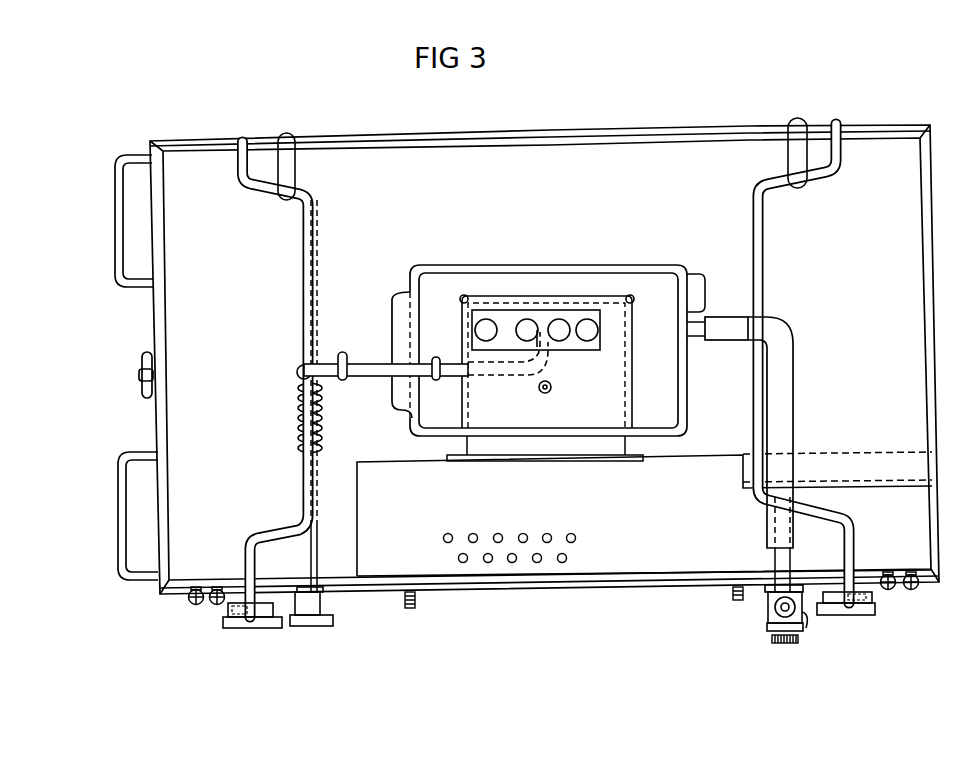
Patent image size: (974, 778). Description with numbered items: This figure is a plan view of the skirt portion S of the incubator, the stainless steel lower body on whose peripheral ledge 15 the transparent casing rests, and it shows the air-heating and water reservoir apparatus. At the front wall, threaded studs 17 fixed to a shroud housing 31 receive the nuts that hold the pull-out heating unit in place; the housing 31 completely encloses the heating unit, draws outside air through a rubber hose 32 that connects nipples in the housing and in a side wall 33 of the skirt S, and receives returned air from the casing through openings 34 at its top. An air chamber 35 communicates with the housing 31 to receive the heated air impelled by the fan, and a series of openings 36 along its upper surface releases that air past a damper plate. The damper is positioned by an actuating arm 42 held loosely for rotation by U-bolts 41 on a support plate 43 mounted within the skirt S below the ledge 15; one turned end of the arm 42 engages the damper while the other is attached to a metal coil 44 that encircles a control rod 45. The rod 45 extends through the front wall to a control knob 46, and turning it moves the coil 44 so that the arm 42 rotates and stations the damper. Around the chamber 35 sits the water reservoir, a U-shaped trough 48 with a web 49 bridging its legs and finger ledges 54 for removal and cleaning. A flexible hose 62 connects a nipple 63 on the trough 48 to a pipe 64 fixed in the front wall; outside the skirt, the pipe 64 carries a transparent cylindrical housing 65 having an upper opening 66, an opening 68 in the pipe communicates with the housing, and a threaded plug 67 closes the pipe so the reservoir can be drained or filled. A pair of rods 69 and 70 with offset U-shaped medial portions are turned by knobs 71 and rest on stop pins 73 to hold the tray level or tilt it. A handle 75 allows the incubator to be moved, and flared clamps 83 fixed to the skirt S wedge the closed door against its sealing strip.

The peripheral ledge 15 is at (583, 138).
The skirt portion S is at (508, 148).
The threaded studs 17 is at (412, 604).
The shroud housing 31 is at (707, 490).
The rubber hose 32 is at (826, 466).
The side wall 33 is at (940, 414).
The openings 34 is at (452, 535).
The air chamber 35 is at (625, 438).
The openings 36 is at (547, 361).
The U-bolts 41 is at (343, 346).
The actuating arm 42 is at (356, 379).
The support plate 43 is at (374, 319).
The metal coil 44 is at (298, 440).
The control rod 45 is at (331, 555).
The control knob 46 is at (310, 620).
The U-shaped trough 48 is at (539, 278).
The web 49 is at (546, 369).
The finger ledges 54 is at (701, 285).
The flexible hose 62 is at (786, 372).
The nipple 63 is at (706, 338).
The pipe 64 is at (795, 561).
The transparent cylindrical housing 65 is at (804, 619).
The upper opening 66 is at (770, 628).
The threaded plug 67 is at (786, 645).
The opening 68 is at (778, 605).
The rod 69 is at (312, 232).
The rod 70 is at (763, 257).
The knobs 71 is at (244, 624).
The stop pins 73 is at (290, 163).
The handle 75 is at (118, 536).
The flared clamps 83 is at (190, 601).